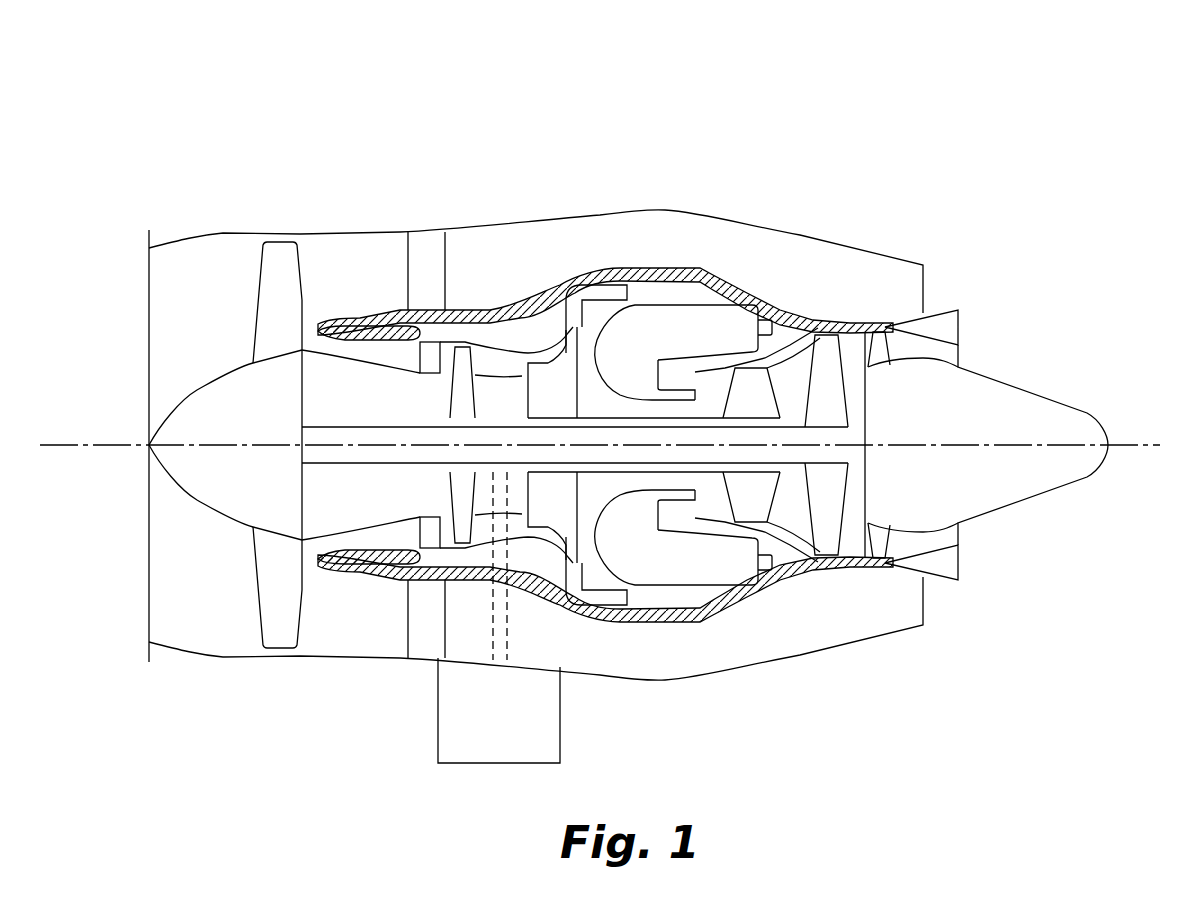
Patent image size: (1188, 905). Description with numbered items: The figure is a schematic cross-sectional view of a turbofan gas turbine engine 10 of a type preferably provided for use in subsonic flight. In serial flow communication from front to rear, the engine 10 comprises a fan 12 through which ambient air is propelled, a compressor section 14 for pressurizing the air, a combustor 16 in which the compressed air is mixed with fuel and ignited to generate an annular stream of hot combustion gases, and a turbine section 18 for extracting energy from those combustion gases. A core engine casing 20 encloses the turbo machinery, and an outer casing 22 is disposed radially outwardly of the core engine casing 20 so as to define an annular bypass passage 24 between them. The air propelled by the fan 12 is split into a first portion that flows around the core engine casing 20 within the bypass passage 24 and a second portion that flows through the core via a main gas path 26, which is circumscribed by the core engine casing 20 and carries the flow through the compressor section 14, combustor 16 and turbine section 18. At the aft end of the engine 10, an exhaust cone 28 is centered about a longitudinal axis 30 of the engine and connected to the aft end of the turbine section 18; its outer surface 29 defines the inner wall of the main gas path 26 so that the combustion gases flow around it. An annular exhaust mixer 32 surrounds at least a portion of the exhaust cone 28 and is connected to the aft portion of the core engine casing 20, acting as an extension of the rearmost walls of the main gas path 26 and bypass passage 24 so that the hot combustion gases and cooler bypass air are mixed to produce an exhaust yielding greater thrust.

The turbofan gas turbine engine 10 is at (600, 408).
The fan 12 is at (273, 577).
The compressor section 14 is at (492, 357).
The combustor 16 is at (665, 330).
The turbine section 18 is at (787, 497).
The core engine casing 20 is at (623, 623).
The outer casing 22 is at (687, 678).
The annular bypass passage 24 is at (590, 237).
The main gas path 26 is at (363, 353).
The exhaust cone 28 is at (1050, 490).
The outer surface 29 is at (997, 380).
The longitudinal axis 30 is at (1140, 445).
The annular exhaust mixer 32 is at (940, 323).